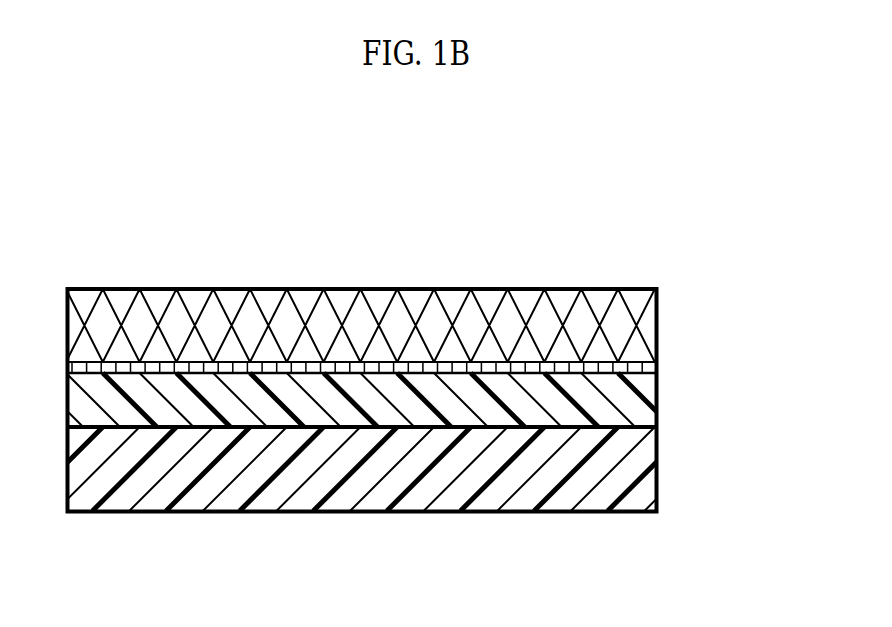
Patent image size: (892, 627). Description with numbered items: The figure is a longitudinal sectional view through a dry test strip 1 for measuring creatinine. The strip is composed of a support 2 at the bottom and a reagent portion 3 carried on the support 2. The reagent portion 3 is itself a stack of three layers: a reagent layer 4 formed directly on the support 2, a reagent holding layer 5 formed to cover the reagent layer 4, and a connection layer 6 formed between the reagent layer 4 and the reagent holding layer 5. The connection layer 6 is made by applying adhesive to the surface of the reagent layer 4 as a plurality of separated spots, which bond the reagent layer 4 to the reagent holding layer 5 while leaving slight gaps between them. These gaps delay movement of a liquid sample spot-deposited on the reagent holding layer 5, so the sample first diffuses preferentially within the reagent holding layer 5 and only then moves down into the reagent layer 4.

The dry test strip 1 is at (362, 253).
The support 2 is at (633, 462).
The reagent portion 3 is at (750, 303).
The reagent layer 4 is at (633, 400).
The reagent holding layer 5 is at (642, 325).
The connection layer 6 is at (643, 366).